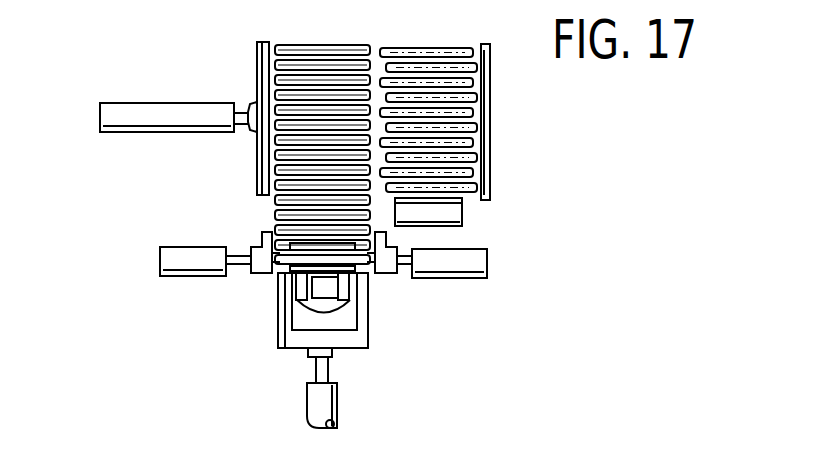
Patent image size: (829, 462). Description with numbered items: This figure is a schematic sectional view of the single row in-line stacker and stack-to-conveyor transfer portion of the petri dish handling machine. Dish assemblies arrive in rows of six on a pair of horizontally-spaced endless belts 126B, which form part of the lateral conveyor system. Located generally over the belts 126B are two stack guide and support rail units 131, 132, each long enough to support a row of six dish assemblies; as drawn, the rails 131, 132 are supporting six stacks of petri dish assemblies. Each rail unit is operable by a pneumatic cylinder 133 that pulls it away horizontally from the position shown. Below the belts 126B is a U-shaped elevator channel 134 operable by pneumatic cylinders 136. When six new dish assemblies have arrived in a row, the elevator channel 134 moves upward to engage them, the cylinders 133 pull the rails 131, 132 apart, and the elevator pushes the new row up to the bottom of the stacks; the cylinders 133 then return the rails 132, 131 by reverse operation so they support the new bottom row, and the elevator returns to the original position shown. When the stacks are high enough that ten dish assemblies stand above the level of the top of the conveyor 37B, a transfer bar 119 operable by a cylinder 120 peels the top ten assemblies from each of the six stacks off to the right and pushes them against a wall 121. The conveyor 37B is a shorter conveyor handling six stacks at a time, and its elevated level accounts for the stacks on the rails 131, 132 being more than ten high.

The transfer bar 119 is at (263, 88).
The cylinder 120 is at (172, 110).
The wall 121 is at (490, 116).
The conveyor 37B is at (447, 213).
The stack guide and support rail unit 131 is at (262, 245).
The stack guide and support rail unit 132 is at (387, 252).
The pneumatic cylinder 133 is at (185, 258).
The U-shaped elevator channel 134 is at (343, 340).
The pair of horizontally-spaced endless belts 126B is at (297, 307).
The pneumatic cylinder 136 is at (320, 403).